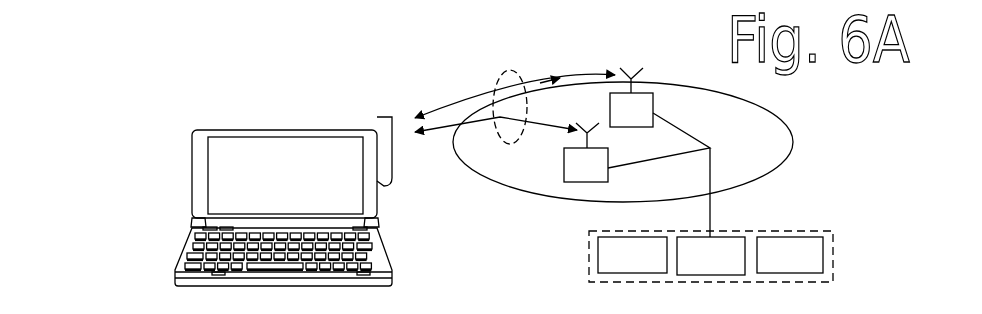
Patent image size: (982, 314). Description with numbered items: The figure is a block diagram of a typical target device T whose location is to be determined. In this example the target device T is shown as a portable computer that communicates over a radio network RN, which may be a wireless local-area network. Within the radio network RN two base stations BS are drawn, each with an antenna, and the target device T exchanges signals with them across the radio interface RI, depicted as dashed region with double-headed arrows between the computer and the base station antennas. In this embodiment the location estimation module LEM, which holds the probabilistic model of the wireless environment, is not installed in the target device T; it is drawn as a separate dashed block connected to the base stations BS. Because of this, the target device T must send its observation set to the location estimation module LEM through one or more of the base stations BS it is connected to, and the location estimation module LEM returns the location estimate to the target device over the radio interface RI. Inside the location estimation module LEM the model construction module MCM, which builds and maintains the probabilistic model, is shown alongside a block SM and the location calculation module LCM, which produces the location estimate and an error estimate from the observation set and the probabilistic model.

The target device T is at (192, 157).
The radio interface RI is at (510, 70).
The radio network RN is at (763, 177).
The base station BS is at (637, 152).
The location estimation module LEM is at (588, 253).
The model construction module MCM is at (632, 255).
The storage module SM is at (711, 256).
The location calculation module LCM is at (790, 255).